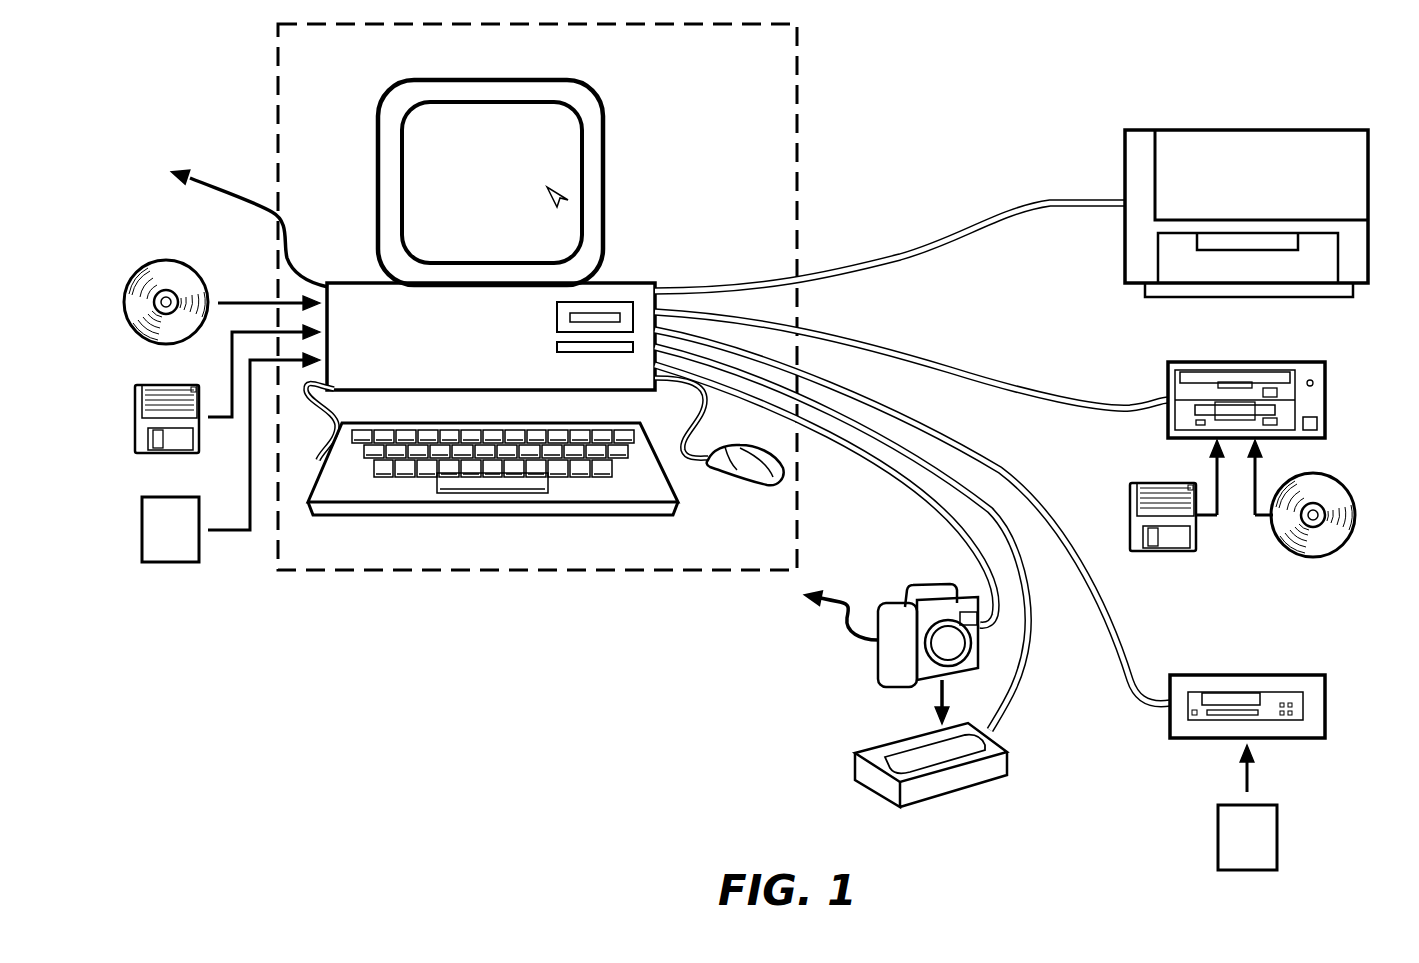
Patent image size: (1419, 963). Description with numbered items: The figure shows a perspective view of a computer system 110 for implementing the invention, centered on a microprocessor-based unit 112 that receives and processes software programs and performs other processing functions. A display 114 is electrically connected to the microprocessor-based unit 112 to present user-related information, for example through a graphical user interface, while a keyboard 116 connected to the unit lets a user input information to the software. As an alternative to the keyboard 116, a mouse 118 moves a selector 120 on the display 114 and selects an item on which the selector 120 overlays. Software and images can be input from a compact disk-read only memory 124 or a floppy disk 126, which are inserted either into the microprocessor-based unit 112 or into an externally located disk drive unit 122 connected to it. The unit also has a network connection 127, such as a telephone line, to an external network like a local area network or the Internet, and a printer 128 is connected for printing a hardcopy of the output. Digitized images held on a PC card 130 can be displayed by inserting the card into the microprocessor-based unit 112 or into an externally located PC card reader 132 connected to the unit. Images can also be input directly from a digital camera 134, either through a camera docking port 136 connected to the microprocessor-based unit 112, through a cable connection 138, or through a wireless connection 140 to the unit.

The computer system 110 is at (278, 98).
The microprocessor-based unit 112 is at (357, 283).
The display 114 is at (394, 90).
The keyboard 116 is at (405, 513).
The mouse 118 is at (729, 473).
The selector 120 is at (568, 192).
The externally located disk drive unit 122 is at (1325, 390).
The compact disk-read only memory (CD-ROM) 124 is at (123, 303).
The floppy disk 126 is at (135, 425).
The network connection 127 is at (232, 193).
The printer 128 is at (1237, 130).
The personal computer card (PC card) 130 is at (142, 532).
The externally located PC card reader 132 is at (1325, 703).
The digital camera 134 is at (930, 585).
The camera docking port 136 is at (855, 765).
The cable connection 138 is at (925, 503).
The wireless connection 140 is at (840, 640).